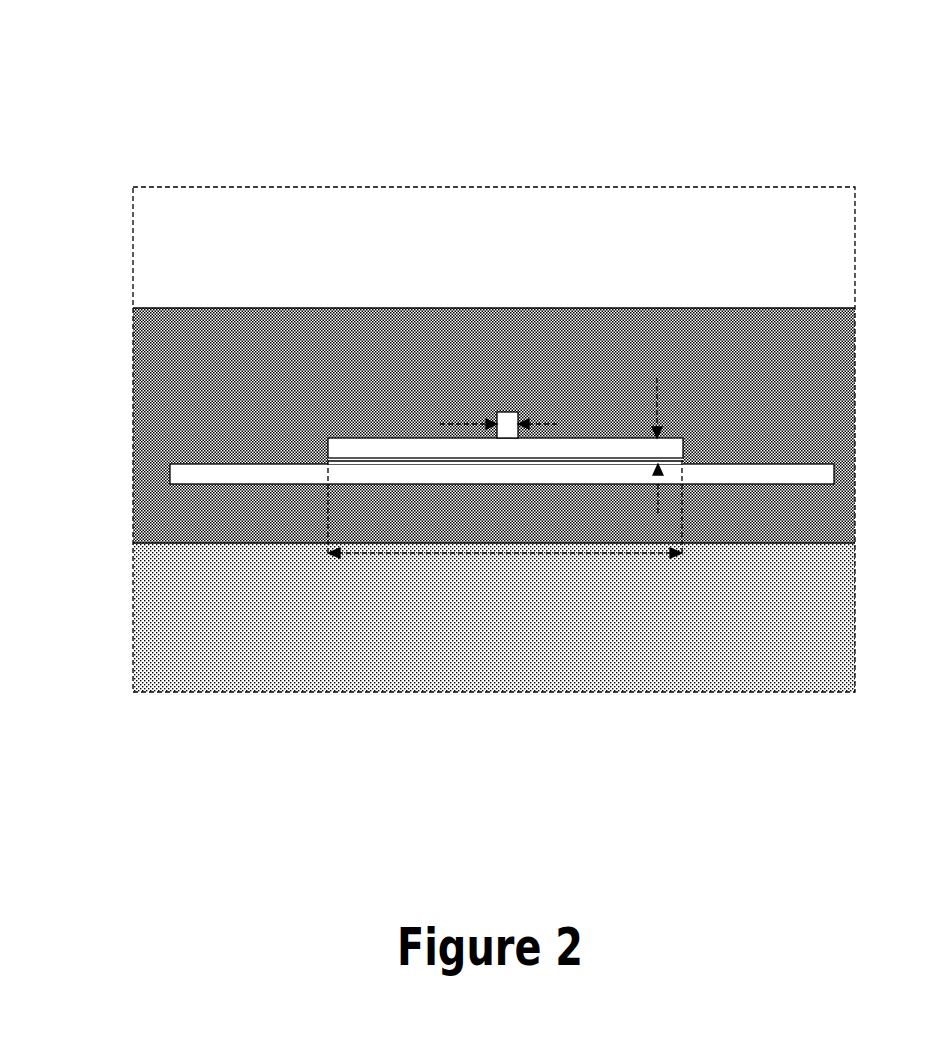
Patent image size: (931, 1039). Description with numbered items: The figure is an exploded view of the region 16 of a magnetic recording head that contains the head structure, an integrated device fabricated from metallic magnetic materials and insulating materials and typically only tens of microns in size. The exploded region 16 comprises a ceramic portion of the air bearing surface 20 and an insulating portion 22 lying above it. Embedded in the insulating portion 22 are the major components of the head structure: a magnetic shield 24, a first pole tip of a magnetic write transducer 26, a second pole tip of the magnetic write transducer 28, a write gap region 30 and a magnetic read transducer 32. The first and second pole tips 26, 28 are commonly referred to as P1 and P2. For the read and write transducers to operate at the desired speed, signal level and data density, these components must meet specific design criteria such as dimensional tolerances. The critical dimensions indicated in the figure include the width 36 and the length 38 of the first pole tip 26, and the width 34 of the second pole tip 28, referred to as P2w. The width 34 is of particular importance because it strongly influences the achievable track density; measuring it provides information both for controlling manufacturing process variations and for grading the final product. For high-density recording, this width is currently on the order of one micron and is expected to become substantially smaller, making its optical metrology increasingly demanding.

The region 16 is at (683, 108).
The ceramic portion of the air bearing surface 20 is at (133, 648).
The insulating portion 22 is at (133, 358).
The magnetic shield 24 is at (834, 472).
The first pole tip of a magnetic write transducer 26 is at (685, 443).
The second pole tip of the magnetic write transducer 28 is at (507, 412).
The write gap region 30 is at (505, 461).
The magnetic read transducer 32 is at (493, 437).
The width of P2 34 is at (557, 424).
The width of P1 36 is at (657, 378).
The length of P1 38 is at (572, 553).